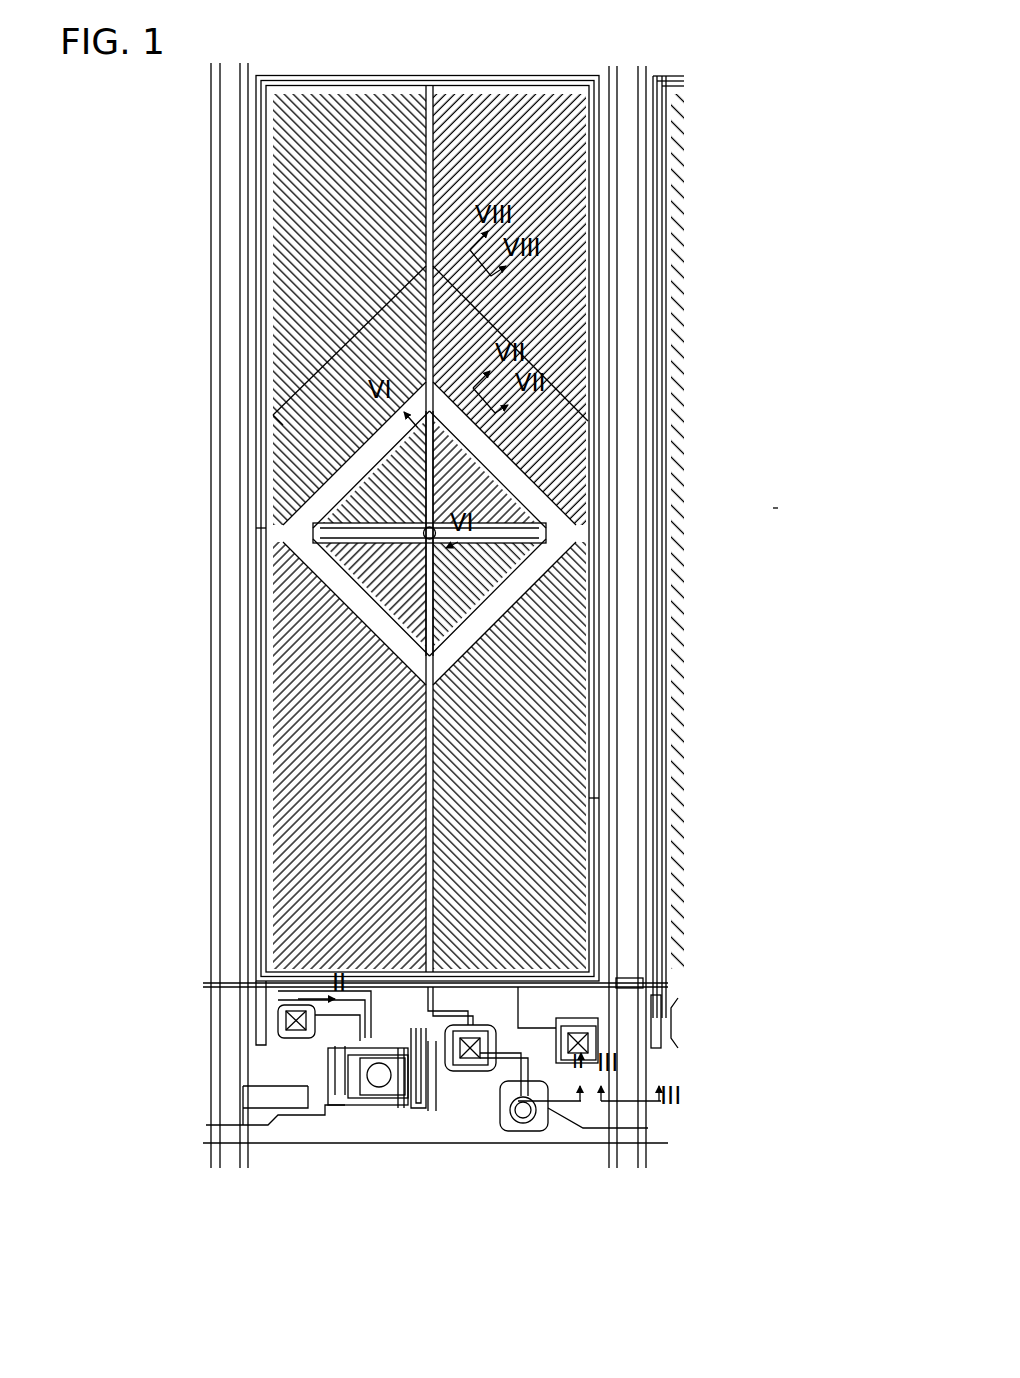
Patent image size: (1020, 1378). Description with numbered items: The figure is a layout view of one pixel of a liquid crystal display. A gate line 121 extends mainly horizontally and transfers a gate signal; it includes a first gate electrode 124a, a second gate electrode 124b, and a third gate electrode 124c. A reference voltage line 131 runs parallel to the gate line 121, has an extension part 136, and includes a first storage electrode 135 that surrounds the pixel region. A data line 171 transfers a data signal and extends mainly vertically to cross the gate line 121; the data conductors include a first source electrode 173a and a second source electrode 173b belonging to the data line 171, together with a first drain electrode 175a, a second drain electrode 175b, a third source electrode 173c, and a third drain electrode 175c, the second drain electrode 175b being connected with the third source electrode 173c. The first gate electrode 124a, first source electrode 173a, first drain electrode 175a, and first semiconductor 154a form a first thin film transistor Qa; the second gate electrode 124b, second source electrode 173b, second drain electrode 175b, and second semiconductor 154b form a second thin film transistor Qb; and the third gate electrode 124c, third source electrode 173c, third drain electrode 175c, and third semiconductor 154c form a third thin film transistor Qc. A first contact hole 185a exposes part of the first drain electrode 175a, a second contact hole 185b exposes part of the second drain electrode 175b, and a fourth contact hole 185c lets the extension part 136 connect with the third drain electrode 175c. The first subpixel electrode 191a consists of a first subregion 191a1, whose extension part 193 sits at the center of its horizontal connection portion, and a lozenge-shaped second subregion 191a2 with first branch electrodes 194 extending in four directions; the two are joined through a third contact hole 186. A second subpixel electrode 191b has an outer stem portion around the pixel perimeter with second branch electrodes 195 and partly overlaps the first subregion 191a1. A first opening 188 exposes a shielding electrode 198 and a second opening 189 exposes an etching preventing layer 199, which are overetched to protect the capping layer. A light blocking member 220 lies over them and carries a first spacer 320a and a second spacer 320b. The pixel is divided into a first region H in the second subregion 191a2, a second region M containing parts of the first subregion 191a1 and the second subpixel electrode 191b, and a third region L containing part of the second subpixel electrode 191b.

The gate line 121 is at (230, 1136).
The first gate electrode 124a is at (300, 1032).
The second gate electrode 124b is at (412, 1102).
The third gate electrode 124c is at (585, 1100).
The reference voltage line 131 is at (628, 930).
The first storage electrode 135 is at (250, 706).
The extension part 136 is at (665, 1010).
The first semiconductor 154a is at (330, 1055).
The second semiconductor 154b is at (440, 1092).
The third semiconductor 154c is at (505, 1122).
The data line 171 is at (230, 278).
The first source electrode 173a is at (330, 1075).
The second source electrode 173b is at (380, 1092).
The third source electrode 173c is at (640, 1062).
The first drain electrode 175a is at (290, 1000).
The second drain electrode 175b is at (365, 1087).
The third drain electrode 175c is at (600, 1130).
The first contact hole 185a is at (288, 1012).
The second contact hole 185b is at (462, 1065).
The fourth contact hole 185c is at (582, 1032).
The third contact hole 186 is at (565, 470).
The first opening 188 is at (290, 1100).
The second opening 189 is at (590, 1050).
The first subpixel electrode 191a is at (760, 545).
The first subregion 191a1 is at (570, 527).
The second subregion 191a2 is at (540, 497).
The second subpixel electrode 191b is at (583, 300).
The extension part 193 is at (492, 426).
The first branch electrodes 194 is at (372, 497).
The second branch electrodes 195 is at (305, 182).
The shielding electrode 198 is at (250, 536).
The etching preventing layer 199 is at (300, 1088).
The light blocking member 220 is at (618, 968).
The first spacer 320a is at (522, 1122).
The second spacer 320b is at (345, 1092).
The first thin film transistor Qa is at (336, 1090).
The second thin film transistor Qb is at (396, 1105).
The third thin film transistor Qc is at (535, 1112).
The third region L is at (300, 125).
The second region M is at (275, 420).
The first region H is at (545, 592).